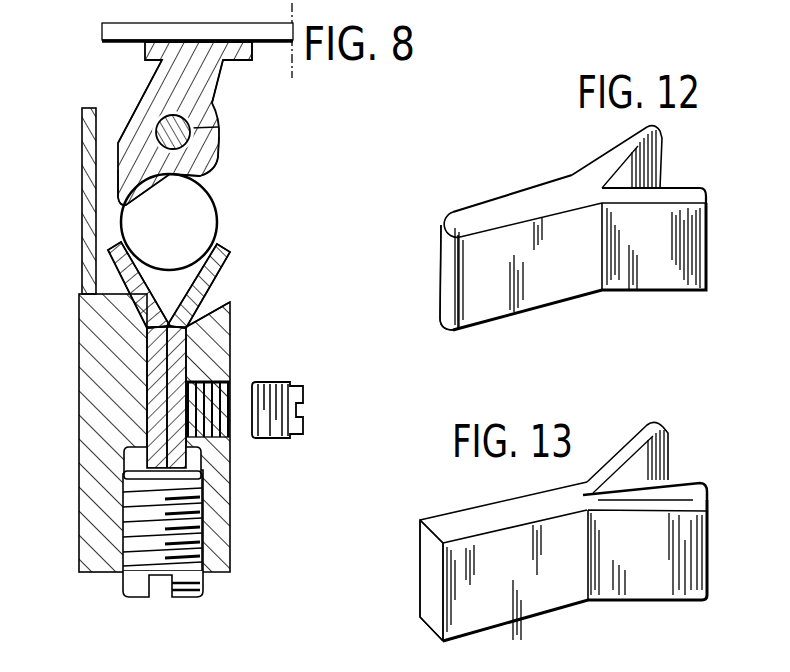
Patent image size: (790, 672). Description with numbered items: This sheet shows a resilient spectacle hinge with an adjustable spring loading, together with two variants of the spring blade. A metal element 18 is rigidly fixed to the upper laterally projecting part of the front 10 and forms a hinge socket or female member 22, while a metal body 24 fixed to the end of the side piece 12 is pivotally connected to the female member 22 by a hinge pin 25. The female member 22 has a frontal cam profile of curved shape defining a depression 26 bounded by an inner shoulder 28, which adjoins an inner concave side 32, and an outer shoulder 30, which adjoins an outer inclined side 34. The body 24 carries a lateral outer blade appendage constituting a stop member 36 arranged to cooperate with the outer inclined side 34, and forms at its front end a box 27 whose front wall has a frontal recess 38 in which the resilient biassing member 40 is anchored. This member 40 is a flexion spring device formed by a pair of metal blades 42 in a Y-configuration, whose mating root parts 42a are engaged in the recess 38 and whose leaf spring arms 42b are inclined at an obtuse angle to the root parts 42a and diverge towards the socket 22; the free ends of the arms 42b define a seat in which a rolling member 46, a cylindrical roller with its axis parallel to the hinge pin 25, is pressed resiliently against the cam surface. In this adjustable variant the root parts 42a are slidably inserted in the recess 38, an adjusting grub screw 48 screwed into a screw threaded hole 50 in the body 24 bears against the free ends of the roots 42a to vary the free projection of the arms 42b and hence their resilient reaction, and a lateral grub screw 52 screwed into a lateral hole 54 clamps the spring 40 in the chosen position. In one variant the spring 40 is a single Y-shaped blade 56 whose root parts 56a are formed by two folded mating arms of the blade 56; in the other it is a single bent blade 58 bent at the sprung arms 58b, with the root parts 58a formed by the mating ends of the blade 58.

In FIG. 8, the front 10 is at (108, 32).
In FIG. 8, the side piece 12 is at (96, 540).
In FIG. 8, the metal element 18 is at (256, 47).
In FIG. 8, the female member 22 is at (147, 88).
In FIG. 8, the metal body 24 is at (217, 537).
In FIG. 8, the hinge pin 25 is at (183, 132).
In FIG. 8, the depression 26 is at (121, 189).
In FIG. 8, the box 27 is at (213, 312).
In FIG. 8, the inner shoulder 28 is at (213, 170).
In FIG. 8, the outer shoulder 30 is at (123, 198).
In FIG. 8, the inner concave side 32 is at (217, 92).
In FIG. 8, the outer inclined side 34 is at (133, 128).
In FIG. 8, the stop member 36 is at (86, 142).
In FIG. 8, the frontal recess 38 is at (175, 412).
In FIG. 8, the resilient biassing member 40 is at (221, 277).
In FIG. 12, the resilient biassing member 40 is at (602, 298).
In FIG. 13, the resilient biassing member 40 is at (580, 608).
In FIG. 8, the metal blades 42 is at (145, 361).
In FIG. 8, the root parts 42a is at (153, 433).
In FIG. 8, the leaf spring arms 42b is at (187, 302).
In FIG. 8, the rolling member 46 is at (185, 221).
In FIG. 8, the adjusting grub screw 48 is at (198, 598).
In FIG. 8, the screw threaded hole 50 is at (197, 467).
In FIG. 8, the lateral grub screw 52 is at (293, 380).
In FIG. 8, the lateral hole 54 is at (213, 423).
In FIG. 12, the Y-shaped blade 56 is at (533, 188).
In FIG. 12, the root parts 56a is at (492, 300).
In FIG. 13, the bent blade 58 is at (497, 498).
In FIG. 13, the root parts 58a is at (435, 610).
In FIG. 13, the sprung arms 58b is at (670, 458).